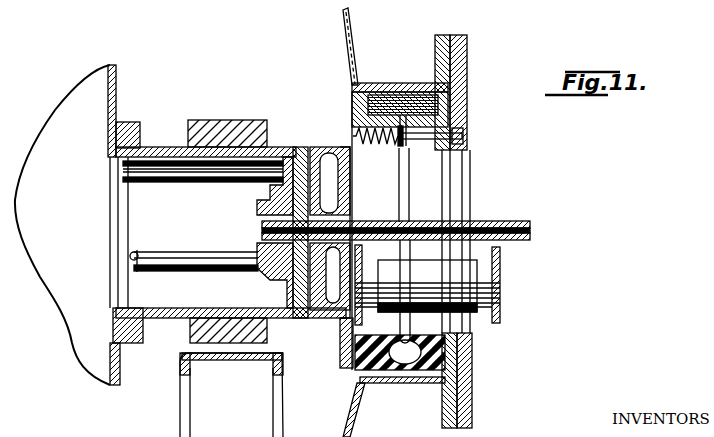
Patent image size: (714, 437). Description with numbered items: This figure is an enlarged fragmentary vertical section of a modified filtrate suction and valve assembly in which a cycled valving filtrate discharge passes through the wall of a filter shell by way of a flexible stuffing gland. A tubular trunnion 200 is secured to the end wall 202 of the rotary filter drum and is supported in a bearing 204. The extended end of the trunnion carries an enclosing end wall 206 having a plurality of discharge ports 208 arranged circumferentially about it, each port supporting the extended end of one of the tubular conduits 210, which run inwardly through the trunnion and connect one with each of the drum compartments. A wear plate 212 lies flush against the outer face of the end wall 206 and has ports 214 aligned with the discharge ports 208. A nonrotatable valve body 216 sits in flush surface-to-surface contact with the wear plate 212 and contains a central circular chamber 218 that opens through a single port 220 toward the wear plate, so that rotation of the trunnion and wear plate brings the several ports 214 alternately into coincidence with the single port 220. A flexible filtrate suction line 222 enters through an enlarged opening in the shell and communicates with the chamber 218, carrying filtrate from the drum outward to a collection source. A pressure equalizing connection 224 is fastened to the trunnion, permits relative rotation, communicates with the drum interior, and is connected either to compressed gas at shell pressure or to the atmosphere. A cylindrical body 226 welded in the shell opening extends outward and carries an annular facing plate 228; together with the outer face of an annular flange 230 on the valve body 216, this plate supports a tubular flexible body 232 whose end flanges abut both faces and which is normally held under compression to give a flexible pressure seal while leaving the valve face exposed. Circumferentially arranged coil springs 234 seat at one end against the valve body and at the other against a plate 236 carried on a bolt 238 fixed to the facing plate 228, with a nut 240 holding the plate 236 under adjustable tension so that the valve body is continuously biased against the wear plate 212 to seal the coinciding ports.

The tubular trunnion 200 is at (150, 147).
The end wall 202 is at (116, 97).
The bearing 204 is at (220, 120).
The enclosing end wall 206 is at (280, 191).
The discharge ports 208 is at (290, 147).
The tubular conduits 210 is at (166, 180).
The wear plate 212 is at (292, 318).
The ports 214 is at (302, 155).
The valve body 216 is at (347, 171).
The circular chamber 218 is at (335, 190).
The single port 220 is at (313, 166).
The flexible filtrate suction line 222 is at (465, 282).
The pressure equalizing connection 224 is at (348, 213).
The cylindrical body 226 is at (370, 83).
The facing plate 228 is at (467, 80).
The annular flange 230 is at (345, 350).
The tubular flexible body 232 is at (468, 108).
The coil springs 234 is at (385, 88).
The plate 236 is at (407, 145).
The bolt 238 is at (463, 148).
The nut 240 is at (405, 140).